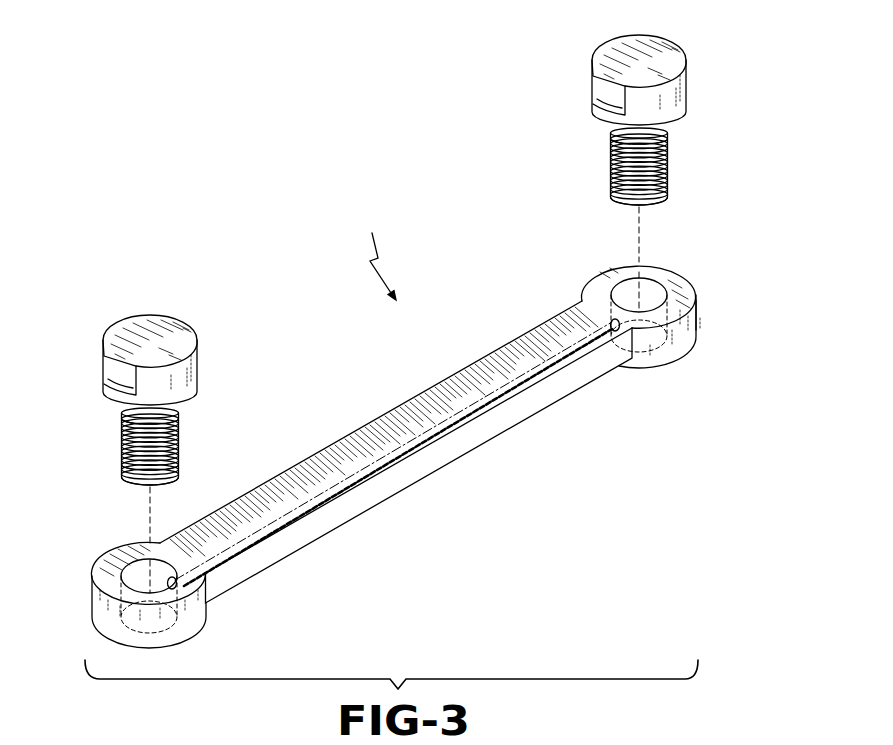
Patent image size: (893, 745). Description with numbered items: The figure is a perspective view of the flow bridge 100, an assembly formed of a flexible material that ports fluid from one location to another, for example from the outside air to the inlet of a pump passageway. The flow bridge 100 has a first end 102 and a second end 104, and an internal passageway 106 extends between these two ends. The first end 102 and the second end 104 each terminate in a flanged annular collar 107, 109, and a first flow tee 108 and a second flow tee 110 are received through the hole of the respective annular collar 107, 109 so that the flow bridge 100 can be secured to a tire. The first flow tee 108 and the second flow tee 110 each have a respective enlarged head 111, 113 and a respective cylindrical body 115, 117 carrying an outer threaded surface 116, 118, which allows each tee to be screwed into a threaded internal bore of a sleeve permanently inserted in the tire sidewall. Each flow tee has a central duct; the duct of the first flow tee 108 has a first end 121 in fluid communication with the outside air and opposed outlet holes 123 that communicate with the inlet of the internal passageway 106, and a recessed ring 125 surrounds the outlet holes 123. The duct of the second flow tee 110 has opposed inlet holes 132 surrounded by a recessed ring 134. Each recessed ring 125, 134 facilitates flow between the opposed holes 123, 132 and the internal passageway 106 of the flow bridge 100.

The flow bridge 100 is at (395, 339).
The first end 102 is at (198, 641).
The second end 104 is at (582, 272).
The internal passageway 106 is at (341, 478).
The flanged annular collar 107 is at (110, 578).
The first flow tee 108 is at (192, 326).
The flanged annular collar 109 is at (665, 355).
The second flow tee 110 is at (681, 39).
The enlarged head 111 is at (137, 330).
The enlarged head 113 is at (624, 50).
The cylindrical body 115 is at (118, 467).
The outer threaded surface 116 is at (167, 448).
The cylindrical body 117 is at (606, 189).
The outer threaded surface 118 is at (660, 170).
The first end 121 is at (135, 490).
The opposed outlet holes 123 is at (124, 425).
The recessed ring 125 is at (166, 419).
The opposed inlet holes 132 is at (627, 145).
The recessed ring 134 is at (646, 139).